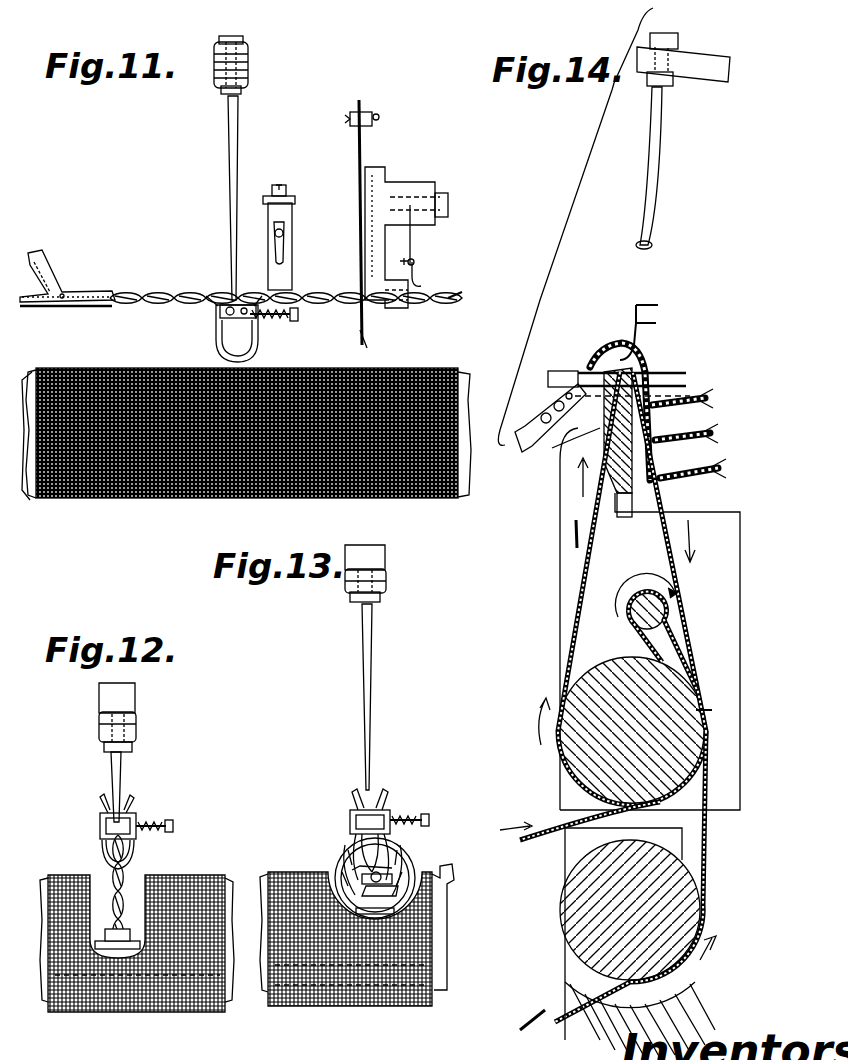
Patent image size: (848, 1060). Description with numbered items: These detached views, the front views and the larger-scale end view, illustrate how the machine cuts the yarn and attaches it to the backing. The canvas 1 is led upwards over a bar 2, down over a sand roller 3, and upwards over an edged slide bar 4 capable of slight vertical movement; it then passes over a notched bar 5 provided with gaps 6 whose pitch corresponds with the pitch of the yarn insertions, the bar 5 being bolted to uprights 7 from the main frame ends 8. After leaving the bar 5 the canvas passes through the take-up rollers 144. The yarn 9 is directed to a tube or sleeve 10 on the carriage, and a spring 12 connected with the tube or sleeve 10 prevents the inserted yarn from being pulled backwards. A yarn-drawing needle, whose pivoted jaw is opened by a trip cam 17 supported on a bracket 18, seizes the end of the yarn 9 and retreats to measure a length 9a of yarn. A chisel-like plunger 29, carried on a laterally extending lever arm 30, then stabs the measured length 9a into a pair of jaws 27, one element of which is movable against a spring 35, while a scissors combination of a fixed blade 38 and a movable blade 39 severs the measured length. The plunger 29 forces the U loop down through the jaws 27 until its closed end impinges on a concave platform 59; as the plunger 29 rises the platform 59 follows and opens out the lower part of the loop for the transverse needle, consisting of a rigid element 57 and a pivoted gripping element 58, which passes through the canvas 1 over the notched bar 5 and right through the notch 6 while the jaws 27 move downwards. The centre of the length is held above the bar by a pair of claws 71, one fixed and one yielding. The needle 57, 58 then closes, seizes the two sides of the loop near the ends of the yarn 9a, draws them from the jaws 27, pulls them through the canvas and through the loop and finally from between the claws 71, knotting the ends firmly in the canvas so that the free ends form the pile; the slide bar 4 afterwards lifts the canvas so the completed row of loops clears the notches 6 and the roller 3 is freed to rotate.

In FIG. 11, the canvas 1 is at (66, 505).
In FIG. 12, the canvas 1 is at (186, 1003).
In FIG. 13, the canvas 1 is at (350, 939).
In FIG. 14, the canvas 1 is at (606, 433).
In FIG. 14, the bar 2 is at (629, 620).
In FIG. 14, the sand roller 3 is at (700, 718).
In FIG. 11, the edged slide bar 4 is at (27, 420).
In FIG. 13, the edged slide bar 4 is at (434, 962).
In FIG. 14, the edged slide bar 4 is at (600, 512).
In FIG. 11, the notched bar 5 is at (40, 495).
In FIG. 12, the notched bar 5 is at (48, 997).
In FIG. 13, the notched bar 5 is at (268, 992).
In FIG. 14, the notched bar 5 is at (626, 516).
In FIG. 11, the gaps or notches 6 is at (470, 372).
In FIG. 12, the gaps or notches 6 is at (222, 876).
In FIG. 13, the gaps or notches 6 is at (451, 876).
In FIG. 14, the gaps or notches 6 is at (630, 396).
In FIG. 14, the uprights 7 is at (560, 496).
In FIG. 14, the main frame ends 8 is at (742, 535).
In FIG. 11, the yarn 9 is at (449, 299).
In FIG. 11, the measured length of yarn 9a is at (183, 292).
In FIG. 12, the measured length of yarn 9a is at (110, 877).
In FIG. 13, the measured length of yarn 9a is at (406, 866).
In FIG. 14, the measured length of yarn 9a is at (595, 362).
In FIG. 11, the tube or sleeve 10 is at (400, 310).
In FIG. 11, the spring 12 is at (420, 283).
In FIG. 11, the trip cam 17 is at (284, 234).
In FIG. 11, the bracket 18 is at (284, 258).
In FIG. 11, the jaws 27 is at (214, 308).
In FIG. 12, the jaws 27 is at (103, 823).
In FIG. 13, the jaws 27 is at (356, 812).
In FIG. 14, the jaws 27 is at (548, 412).
In FIG. 11, the chisel-like plunger 29 is at (231, 158).
In FIG. 12, the chisel-like plunger 29 is at (121, 782).
In FIG. 13, the chisel-like plunger 29 is at (369, 688).
In FIG. 14, the chisel-like plunger 29 is at (650, 147).
In FIG. 11, the lever arm 30 is at (248, 57).
In FIG. 12, the lever arm 30 is at (136, 702).
In FIG. 13, the lever arm 30 is at (385, 560).
In FIG. 14, the lever arm 30 is at (702, 74).
In FIG. 11, the spring 35 is at (270, 320).
In FIG. 12, the spring 35 is at (158, 821).
In FIG. 13, the spring 35 is at (413, 818).
In FIG. 11, the fixed blade 38 is at (372, 246).
In FIG. 11, the movable blade 39 is at (357, 147).
In FIG. 13, the rigid element of transverse needle 57 is at (348, 882).
In FIG. 14, the rigid element of transverse needle 57 is at (562, 372).
In FIG. 14, the pivoted gripping element 58 is at (550, 448).
In FIG. 12, the concave platform 59 is at (117, 950).
In FIG. 13, the concave platform 59 is at (397, 1004).
In FIG. 11, the claws 71 is at (215, 345).
In FIG. 12, the claws 71 is at (137, 843).
In FIG. 13, the claws 71 is at (356, 840).
In FIG. 14, the claws 71 is at (640, 346).
In FIG. 14, the take-up rollers 144 is at (563, 907).